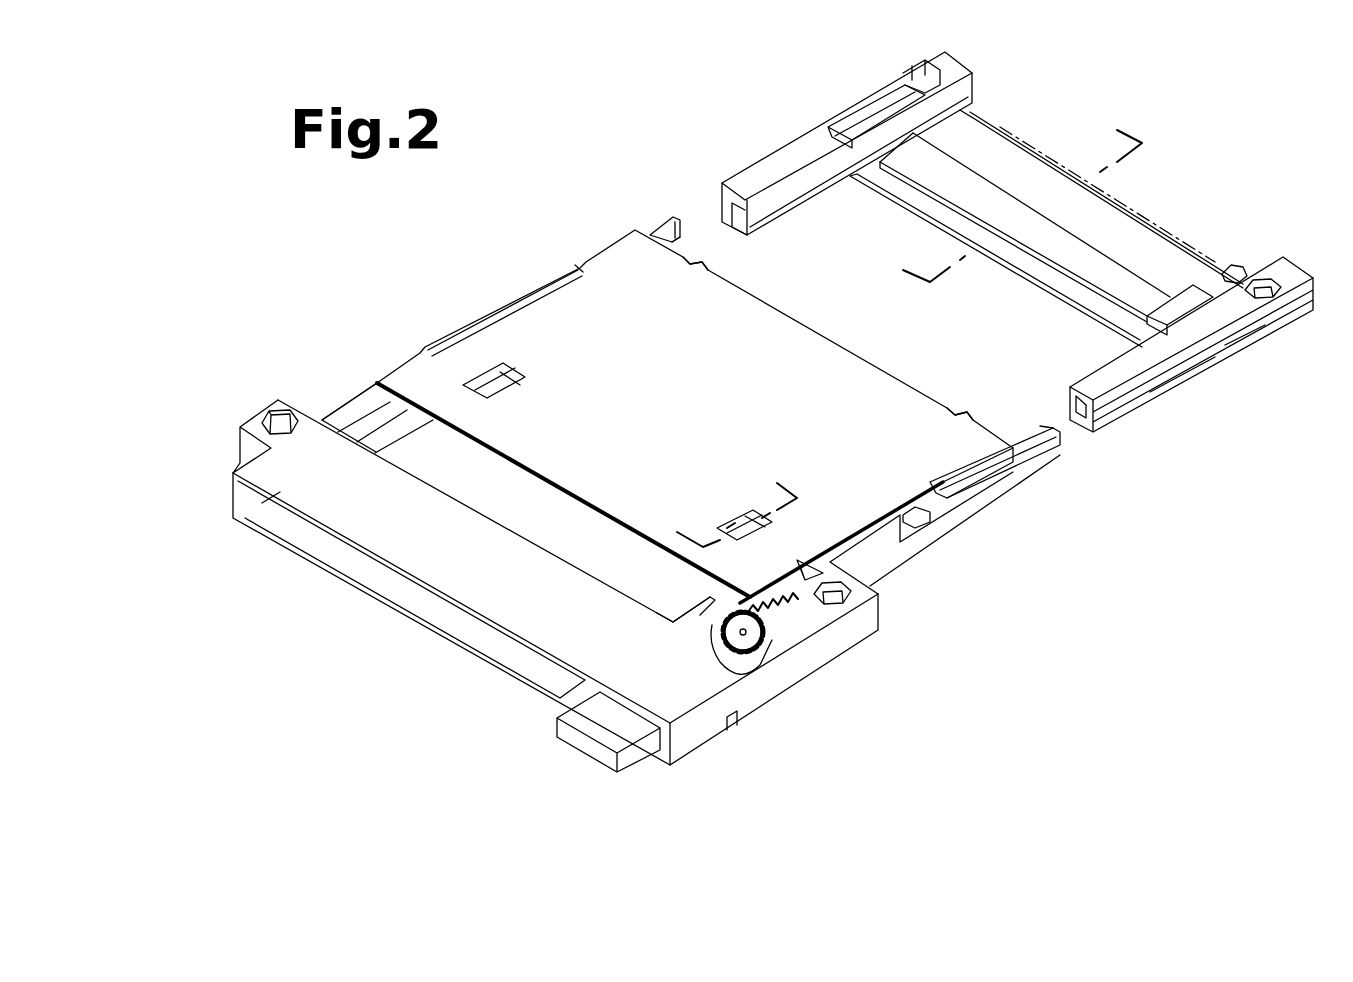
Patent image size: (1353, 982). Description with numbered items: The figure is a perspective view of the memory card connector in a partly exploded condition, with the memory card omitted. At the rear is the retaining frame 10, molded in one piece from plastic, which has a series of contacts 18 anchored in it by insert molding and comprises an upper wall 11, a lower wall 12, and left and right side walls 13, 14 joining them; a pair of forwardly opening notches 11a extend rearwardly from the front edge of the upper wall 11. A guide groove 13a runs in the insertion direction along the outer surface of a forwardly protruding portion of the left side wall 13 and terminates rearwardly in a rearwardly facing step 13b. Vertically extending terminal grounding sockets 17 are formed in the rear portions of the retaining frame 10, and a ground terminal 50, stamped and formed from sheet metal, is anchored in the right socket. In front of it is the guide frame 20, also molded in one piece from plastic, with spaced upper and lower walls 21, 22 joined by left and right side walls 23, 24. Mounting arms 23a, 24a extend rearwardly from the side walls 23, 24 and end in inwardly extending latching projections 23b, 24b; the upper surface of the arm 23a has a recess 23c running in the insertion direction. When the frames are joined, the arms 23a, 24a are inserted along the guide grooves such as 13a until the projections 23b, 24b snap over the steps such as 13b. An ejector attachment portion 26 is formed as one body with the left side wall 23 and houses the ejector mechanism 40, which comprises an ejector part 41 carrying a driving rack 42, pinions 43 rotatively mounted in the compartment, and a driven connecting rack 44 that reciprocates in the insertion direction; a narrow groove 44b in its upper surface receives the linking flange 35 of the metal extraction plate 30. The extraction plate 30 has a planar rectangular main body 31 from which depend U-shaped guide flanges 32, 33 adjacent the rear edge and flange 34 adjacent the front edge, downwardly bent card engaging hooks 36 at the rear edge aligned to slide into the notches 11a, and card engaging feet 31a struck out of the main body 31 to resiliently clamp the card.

The retaining frame 10 is at (1031, 254).
The upper wall 11 is at (1120, 212).
The notches 11a is at (1205, 230).
The lower wall 12 is at (1045, 292).
The left side wall 13 is at (1243, 310).
The guide groove 13a is at (1160, 385).
The step 13b is at (1237, 342).
The right side wall 14 is at (788, 160).
The terminal grounding sockets 17 is at (1275, 282).
The contacts 18 is at (1233, 266).
The guide frame 20 is at (673, 479).
The upper wall 21 is at (511, 596).
The lower wall 22 is at (450, 640).
The left side wall 23 is at (877, 557).
The mounting arm 23a is at (1010, 470).
The latching projection 23b is at (1052, 428).
The recess 23c is at (937, 515).
The right side wall 24 is at (353, 410).
The mounting arm 24a is at (655, 225).
The latching projection 24b is at (680, 220).
The ejector attachment portion 26 is at (838, 645).
The extraction plate 30 is at (717, 375).
The main body 31 is at (722, 403).
The card engaging feet 31a is at (505, 392).
The flange 32 is at (1015, 465).
The flange 33 is at (612, 255).
The flange 34 is at (400, 362).
The linking flange 35 is at (765, 582).
The card engaging hooks 36 is at (712, 265).
The ejector mechanism 40 is at (723, 658).
The ejector part 41 is at (628, 745).
The driving rack 42 is at (753, 667).
The pinions 43 is at (720, 645).
The connecting driven rack 44 is at (795, 606).
The groove 44b is at (716, 605).
The ground terminal 50 is at (875, 108).